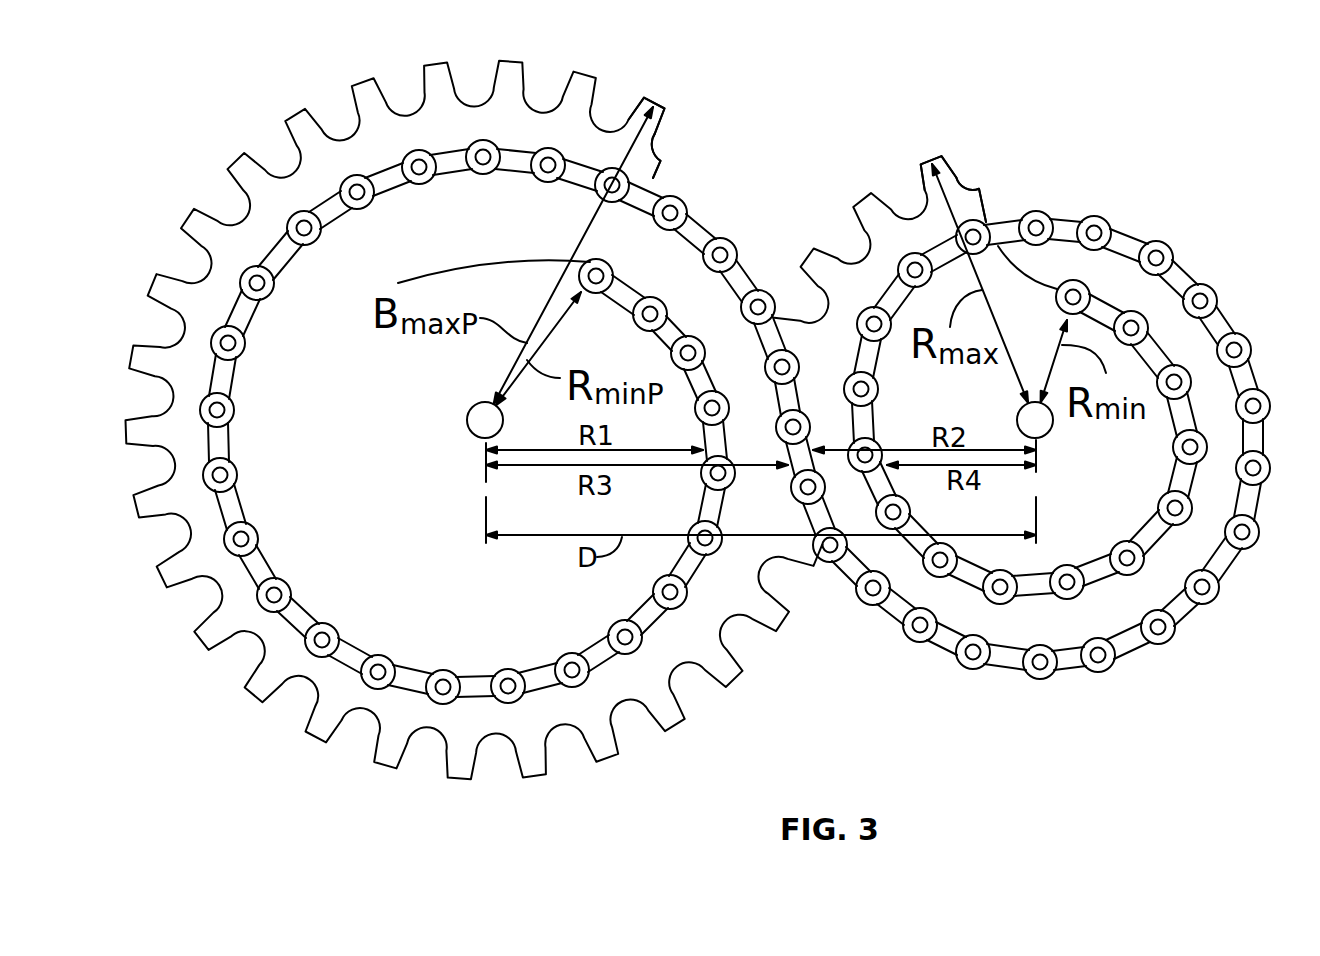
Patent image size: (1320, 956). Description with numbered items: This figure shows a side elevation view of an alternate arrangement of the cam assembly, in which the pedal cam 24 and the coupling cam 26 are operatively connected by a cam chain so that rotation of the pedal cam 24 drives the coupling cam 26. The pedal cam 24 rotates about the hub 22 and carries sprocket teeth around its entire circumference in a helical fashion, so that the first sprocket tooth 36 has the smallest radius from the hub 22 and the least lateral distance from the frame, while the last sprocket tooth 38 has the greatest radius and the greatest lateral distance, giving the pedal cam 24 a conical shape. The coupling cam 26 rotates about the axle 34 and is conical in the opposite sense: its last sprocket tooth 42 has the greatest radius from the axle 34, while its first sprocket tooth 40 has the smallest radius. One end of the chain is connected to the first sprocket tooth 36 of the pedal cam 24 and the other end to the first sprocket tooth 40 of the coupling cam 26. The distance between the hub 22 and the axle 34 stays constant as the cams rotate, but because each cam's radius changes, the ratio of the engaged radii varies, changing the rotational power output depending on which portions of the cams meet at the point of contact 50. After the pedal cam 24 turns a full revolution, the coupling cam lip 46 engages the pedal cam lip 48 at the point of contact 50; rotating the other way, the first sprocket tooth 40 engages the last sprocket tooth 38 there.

The hub 22 is at (468, 423).
The pedal cam 24 is at (262, 82).
The coupling cam 26 is at (1200, 206).
The axle 34 is at (1056, 426).
The first sprocket tooth of the pedal cam 36 is at (590, 262).
The last sprocket tooth of the pedal cam 38 is at (646, 100).
The first sprocket tooth of the coupling cam 40 is at (1088, 275).
The last sprocket tooth of the coupling cam 42 is at (928, 163).
The coupling cam lip 46 is at (984, 204).
The pedal cam lip 48 is at (658, 177).
The point of contact 50 is at (785, 428).